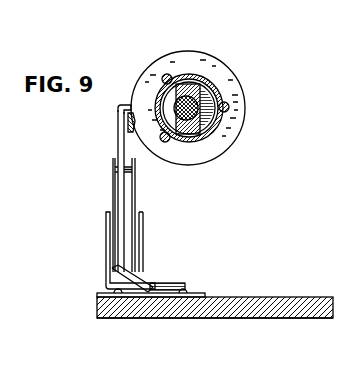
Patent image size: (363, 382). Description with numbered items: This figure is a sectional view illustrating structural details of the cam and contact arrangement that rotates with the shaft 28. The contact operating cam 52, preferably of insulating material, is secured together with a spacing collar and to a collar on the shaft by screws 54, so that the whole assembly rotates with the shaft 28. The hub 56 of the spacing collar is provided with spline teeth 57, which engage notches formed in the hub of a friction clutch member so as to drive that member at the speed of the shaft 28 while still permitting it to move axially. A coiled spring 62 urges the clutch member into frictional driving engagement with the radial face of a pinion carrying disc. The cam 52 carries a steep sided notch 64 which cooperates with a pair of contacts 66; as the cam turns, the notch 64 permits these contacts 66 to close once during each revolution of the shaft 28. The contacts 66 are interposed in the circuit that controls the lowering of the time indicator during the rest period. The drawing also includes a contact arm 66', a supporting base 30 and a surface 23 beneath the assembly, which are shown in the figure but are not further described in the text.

The support surface 23 is at (208, 321).
The shaft 28 is at (218, 122).
The base plate 30 is at (237, 300).
The contact operating cam 52 is at (233, 86).
The screws 54 is at (168, 74).
The hub 56 is at (139, 77).
The spline teeth 57 is at (195, 82).
The coiled spring 62 is at (211, 78).
The steep sided notch 64 is at (121, 135).
The contacts 66 is at (108, 118).
The sleeve 66' is at (142, 215).